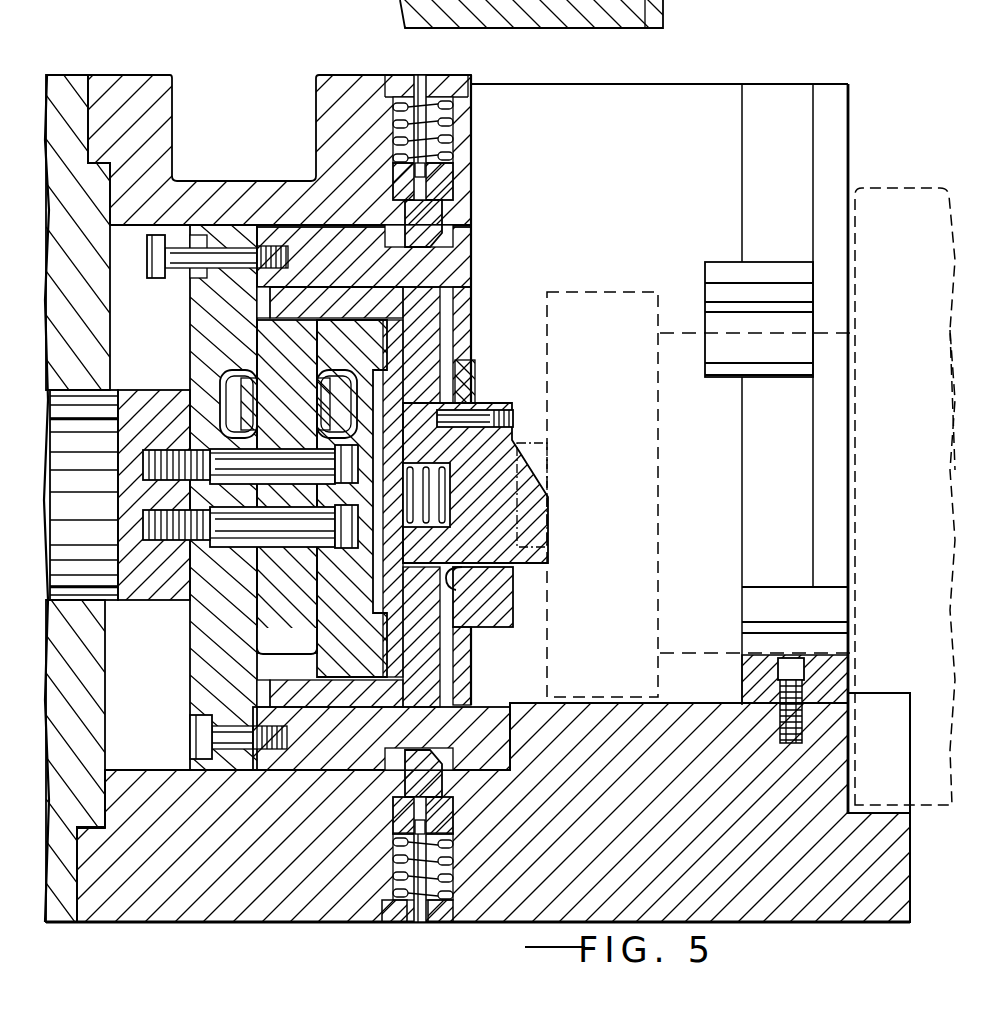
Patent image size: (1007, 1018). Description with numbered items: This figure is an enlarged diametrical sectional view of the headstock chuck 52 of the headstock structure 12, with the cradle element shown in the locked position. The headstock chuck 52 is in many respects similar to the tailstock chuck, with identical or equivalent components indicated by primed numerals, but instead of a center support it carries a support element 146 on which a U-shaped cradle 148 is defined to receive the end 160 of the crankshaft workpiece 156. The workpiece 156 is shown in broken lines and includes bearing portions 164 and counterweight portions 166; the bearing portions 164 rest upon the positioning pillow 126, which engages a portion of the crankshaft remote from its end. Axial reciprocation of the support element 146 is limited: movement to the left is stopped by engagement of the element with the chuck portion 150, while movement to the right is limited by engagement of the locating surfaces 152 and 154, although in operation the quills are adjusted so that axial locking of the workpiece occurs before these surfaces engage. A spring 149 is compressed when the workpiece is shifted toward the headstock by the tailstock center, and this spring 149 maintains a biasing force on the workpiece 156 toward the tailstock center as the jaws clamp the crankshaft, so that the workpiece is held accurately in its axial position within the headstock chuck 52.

The headstock structure 12 is at (244, 44).
The headstock chuck 52 is at (775, 897).
The positioning pillow 126 is at (852, 680).
The support element 146 is at (497, 543).
The U-shaped cradle 148 is at (533, 465).
The spring 149 is at (450, 482).
The chuck portion 150 is at (390, 593).
The locating surface 152 is at (468, 372).
The locating surface 154 is at (468, 572).
The crankshaft workpiece 156 is at (898, 188).
The end 160 is at (580, 292).
The bearing portions 164 is at (687, 653).
The counterweight portions 166 is at (902, 460).